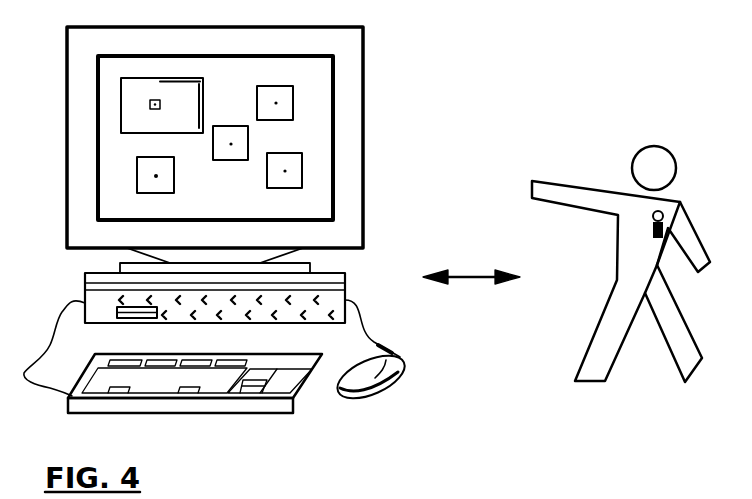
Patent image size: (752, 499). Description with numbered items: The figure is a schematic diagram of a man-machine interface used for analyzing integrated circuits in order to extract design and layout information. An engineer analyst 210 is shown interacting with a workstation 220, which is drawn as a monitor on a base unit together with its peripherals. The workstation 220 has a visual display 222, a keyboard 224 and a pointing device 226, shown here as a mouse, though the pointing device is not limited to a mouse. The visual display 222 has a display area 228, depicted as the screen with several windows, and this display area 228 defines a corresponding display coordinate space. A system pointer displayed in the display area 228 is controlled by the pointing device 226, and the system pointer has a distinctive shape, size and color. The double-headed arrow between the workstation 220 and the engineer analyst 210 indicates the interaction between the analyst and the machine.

The engineer analyst 210 is at (602, 188).
The workstation 220 is at (458, 130).
The visual display 222 is at (348, 43).
The keyboard 224 is at (323, 390).
The pointing device 226 is at (385, 373).
The display area 228 is at (315, 203).